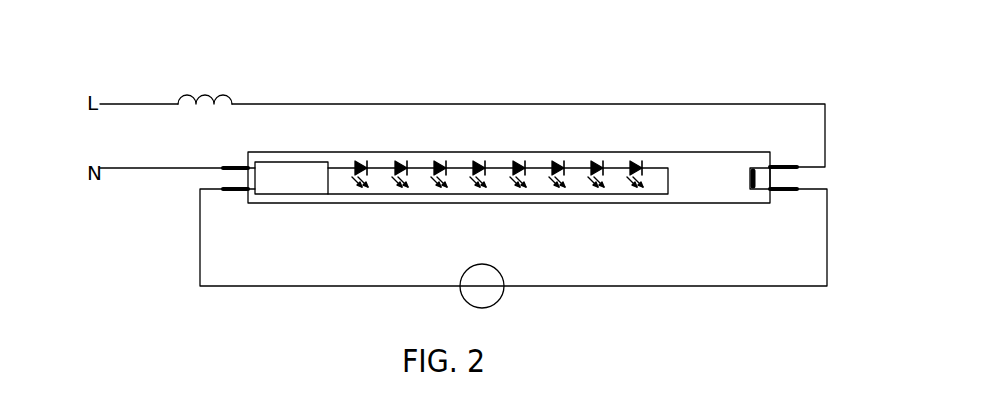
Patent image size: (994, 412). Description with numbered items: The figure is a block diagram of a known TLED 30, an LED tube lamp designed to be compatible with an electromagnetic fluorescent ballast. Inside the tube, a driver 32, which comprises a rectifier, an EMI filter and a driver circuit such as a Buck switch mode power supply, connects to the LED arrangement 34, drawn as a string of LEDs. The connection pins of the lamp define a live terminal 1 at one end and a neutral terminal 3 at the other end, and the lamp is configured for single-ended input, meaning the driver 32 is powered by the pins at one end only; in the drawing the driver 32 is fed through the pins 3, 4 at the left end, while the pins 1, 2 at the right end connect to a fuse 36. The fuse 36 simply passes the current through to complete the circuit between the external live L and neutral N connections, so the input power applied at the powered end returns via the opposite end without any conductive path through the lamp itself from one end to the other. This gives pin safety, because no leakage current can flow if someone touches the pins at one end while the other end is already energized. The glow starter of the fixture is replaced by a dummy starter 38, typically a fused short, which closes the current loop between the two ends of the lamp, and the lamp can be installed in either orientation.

The live terminal 1 is at (783, 166).
The second lamp pin 2 is at (785, 190).
The neutral terminal 3 is at (232, 166).
The fourth lamp pin 4 is at (228, 190).
The TLED 30 is at (657, 152).
The driver 32 is at (320, 162).
The LED arrangement 34 is at (590, 142).
The fuse 36 is at (750, 182).
The dummy starter 38 is at (462, 273).